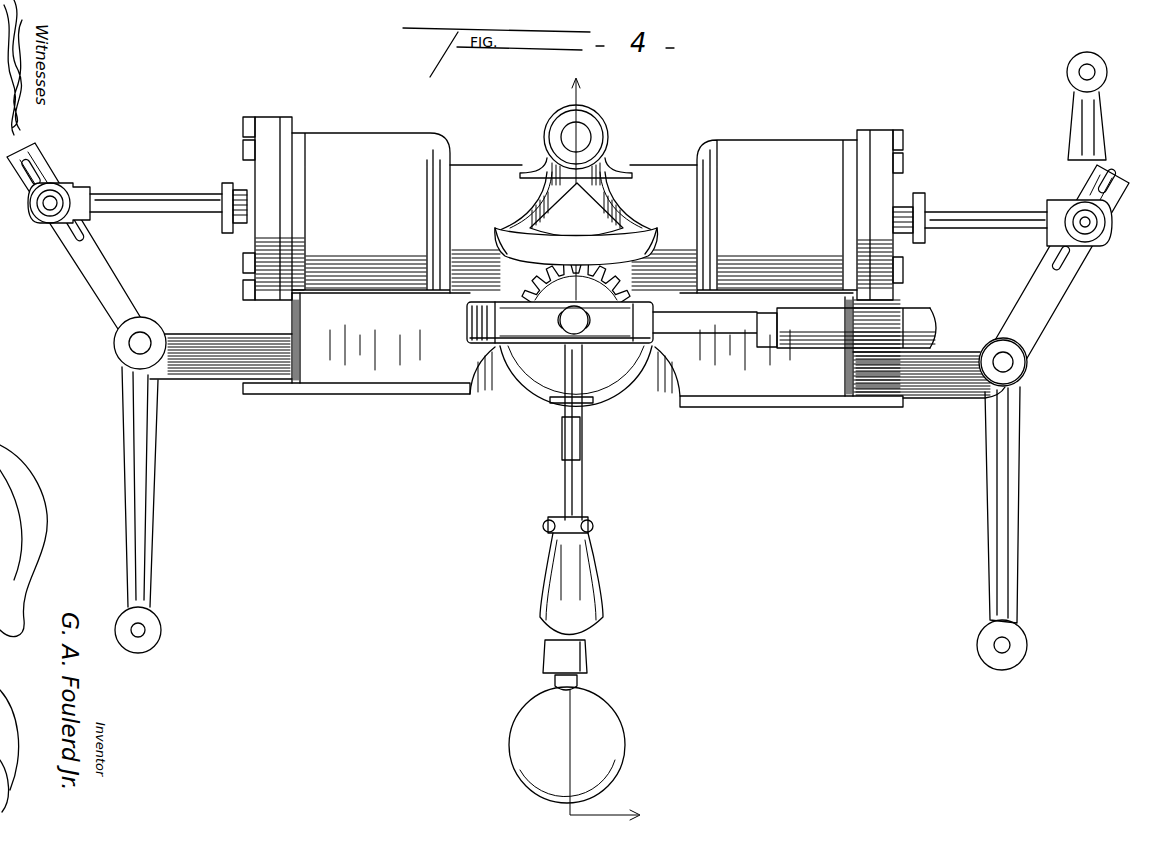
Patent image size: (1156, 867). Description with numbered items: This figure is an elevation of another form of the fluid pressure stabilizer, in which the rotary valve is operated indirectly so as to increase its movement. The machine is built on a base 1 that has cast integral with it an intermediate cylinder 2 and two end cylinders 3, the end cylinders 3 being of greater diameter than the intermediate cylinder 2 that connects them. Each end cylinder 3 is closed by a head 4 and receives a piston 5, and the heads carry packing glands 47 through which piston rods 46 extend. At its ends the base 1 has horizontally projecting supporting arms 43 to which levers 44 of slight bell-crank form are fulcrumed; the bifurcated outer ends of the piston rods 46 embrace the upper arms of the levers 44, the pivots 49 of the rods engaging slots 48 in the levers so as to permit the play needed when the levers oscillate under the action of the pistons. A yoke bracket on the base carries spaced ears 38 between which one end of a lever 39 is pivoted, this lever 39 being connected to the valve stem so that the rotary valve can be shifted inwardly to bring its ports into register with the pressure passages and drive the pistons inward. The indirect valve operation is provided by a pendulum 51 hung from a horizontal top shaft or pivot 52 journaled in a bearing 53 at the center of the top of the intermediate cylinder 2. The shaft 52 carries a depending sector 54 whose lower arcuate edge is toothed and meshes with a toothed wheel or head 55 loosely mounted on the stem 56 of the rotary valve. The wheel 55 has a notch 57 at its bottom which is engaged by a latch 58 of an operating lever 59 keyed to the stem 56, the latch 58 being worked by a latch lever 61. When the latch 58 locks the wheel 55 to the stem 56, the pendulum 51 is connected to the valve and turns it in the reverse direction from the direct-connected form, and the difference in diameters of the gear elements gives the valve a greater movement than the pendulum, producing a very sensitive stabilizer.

The base 1 is at (331, 383).
The intermediate cylinder 2 is at (462, 165).
The end cylinder 3 is at (356, 133).
The cylinder head 4 is at (264, 113).
The piston 5 is at (614, 439).
The spaced ears 38 is at (470, 318).
The lever 39 is at (732, 338).
The supporting arm 43 is at (212, 380).
The lever 44 is at (120, 283).
The piston rod 46 is at (150, 180).
The packing gland 47 is at (222, 200).
The slot 48 is at (40, 172).
The pivot 49 is at (52, 208).
The pendulum 51 is at (582, 690).
The top shaft or pivot 52 is at (582, 134).
The bearing 53 is at (612, 128).
The depending sector 54 is at (636, 176).
The toothed wheel or head 55 is at (608, 282).
The valve stem 56 is at (560, 332).
The notch 57 is at (563, 373).
The latch 58 is at (568, 398).
The operating lever 59 is at (586, 656).
The latch lever 61 is at (590, 590).